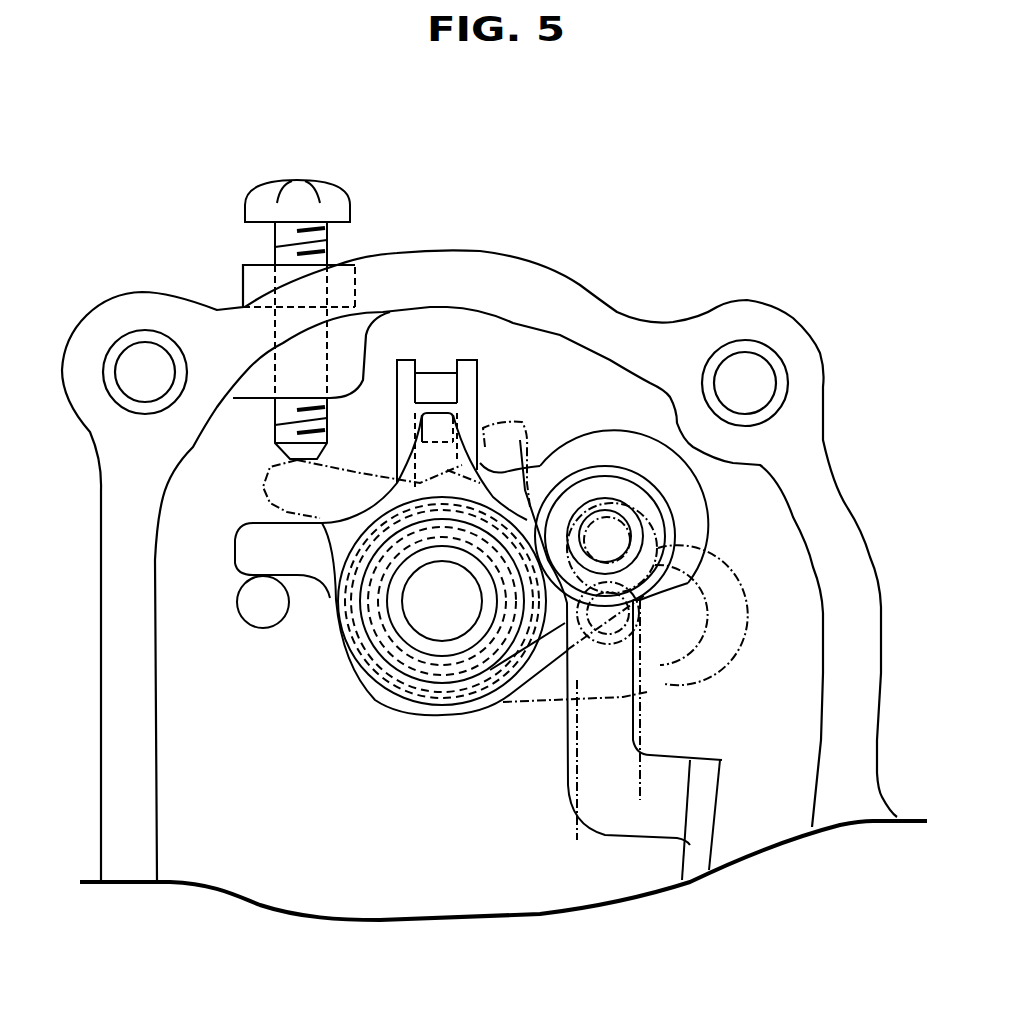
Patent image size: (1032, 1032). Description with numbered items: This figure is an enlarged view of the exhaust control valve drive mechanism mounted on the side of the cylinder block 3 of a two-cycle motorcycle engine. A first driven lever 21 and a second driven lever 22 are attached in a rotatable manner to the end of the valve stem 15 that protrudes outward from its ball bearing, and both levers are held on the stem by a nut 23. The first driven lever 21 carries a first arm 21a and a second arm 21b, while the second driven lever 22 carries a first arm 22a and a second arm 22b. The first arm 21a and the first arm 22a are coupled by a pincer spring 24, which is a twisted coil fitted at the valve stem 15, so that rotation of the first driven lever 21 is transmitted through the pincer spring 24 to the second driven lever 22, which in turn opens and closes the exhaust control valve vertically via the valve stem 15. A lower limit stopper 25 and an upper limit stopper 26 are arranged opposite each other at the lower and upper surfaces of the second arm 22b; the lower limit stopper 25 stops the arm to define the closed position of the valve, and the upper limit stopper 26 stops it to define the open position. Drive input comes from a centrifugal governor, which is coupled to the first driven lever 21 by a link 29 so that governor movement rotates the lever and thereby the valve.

The cylinder block 3 is at (613, 310).
The valve stem 15 is at (433, 620).
The first driven lever 21 is at (507, 473).
The first arm 21a is at (433, 378).
The second arm 21b is at (690, 507).
The second driven lever 22 is at (333, 517).
The first arm 22a is at (440, 425).
The second arm 22b is at (253, 548).
The nut 23 is at (440, 675).
The pincer spring 24 is at (467, 363).
The lower limit stopper 25 is at (267, 610).
The upper limit stopper 26 is at (280, 410).
The link 29 is at (707, 810).